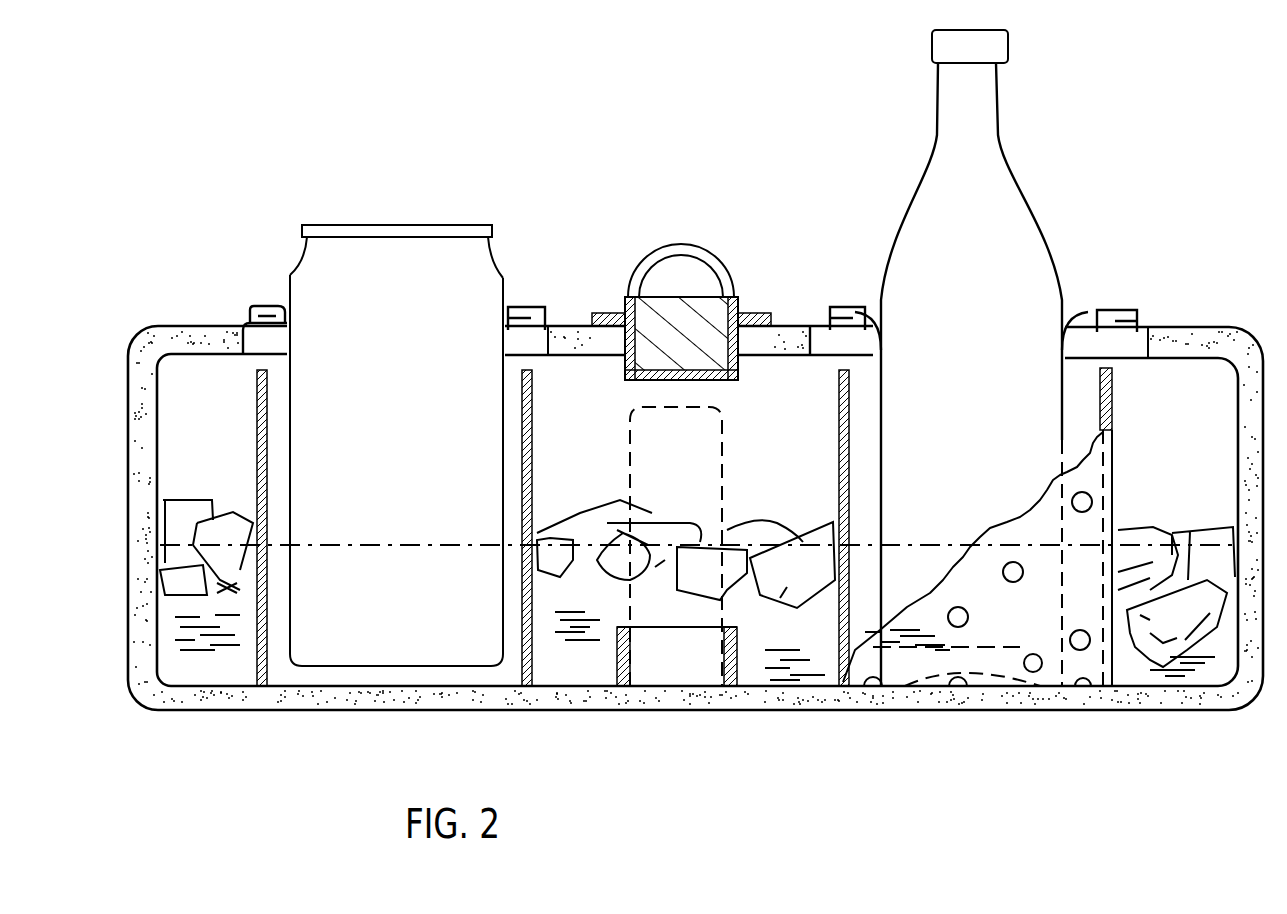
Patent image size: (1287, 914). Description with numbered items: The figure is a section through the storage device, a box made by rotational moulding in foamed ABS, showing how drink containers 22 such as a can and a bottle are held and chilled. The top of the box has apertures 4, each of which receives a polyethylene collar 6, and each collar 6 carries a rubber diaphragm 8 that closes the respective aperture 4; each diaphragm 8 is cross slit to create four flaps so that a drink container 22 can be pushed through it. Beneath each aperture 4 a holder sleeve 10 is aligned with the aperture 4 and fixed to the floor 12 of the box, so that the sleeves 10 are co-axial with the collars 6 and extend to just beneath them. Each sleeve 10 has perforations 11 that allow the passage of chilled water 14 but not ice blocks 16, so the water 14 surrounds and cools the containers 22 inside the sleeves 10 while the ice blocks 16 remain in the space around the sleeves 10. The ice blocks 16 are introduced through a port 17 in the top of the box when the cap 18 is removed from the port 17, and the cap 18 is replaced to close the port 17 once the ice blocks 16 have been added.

The drink container 22 is at (287, 268).
The aperture 4 is at (535, 340).
The cap 18 is at (725, 300).
The port 17 is at (720, 392).
The rubber diaphragm 8 is at (1070, 325).
The collar 6 is at (1110, 312).
The holder sleeve 10 is at (1112, 395).
The perforation 11 is at (1073, 650).
The floor 12 is at (1162, 688).
The ice block 16 is at (167, 515).
The chilled water 14 is at (172, 624).